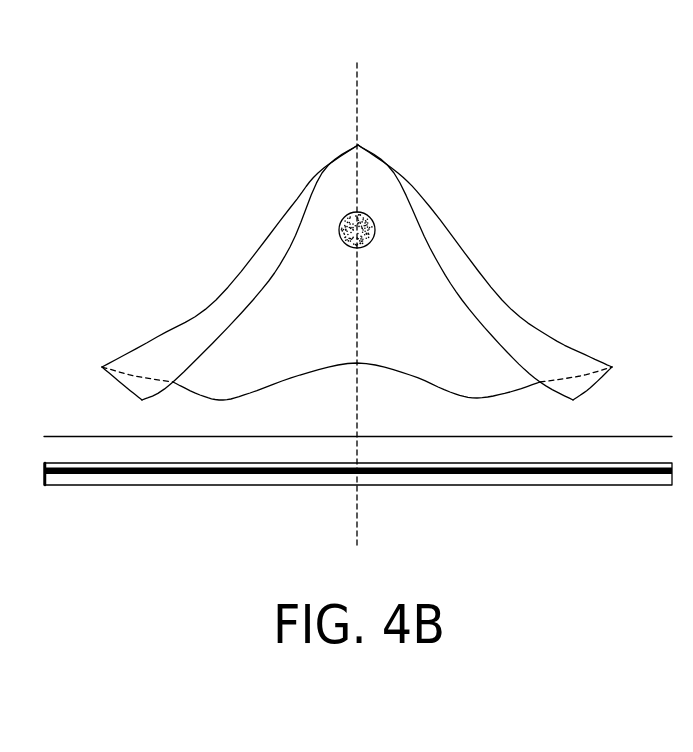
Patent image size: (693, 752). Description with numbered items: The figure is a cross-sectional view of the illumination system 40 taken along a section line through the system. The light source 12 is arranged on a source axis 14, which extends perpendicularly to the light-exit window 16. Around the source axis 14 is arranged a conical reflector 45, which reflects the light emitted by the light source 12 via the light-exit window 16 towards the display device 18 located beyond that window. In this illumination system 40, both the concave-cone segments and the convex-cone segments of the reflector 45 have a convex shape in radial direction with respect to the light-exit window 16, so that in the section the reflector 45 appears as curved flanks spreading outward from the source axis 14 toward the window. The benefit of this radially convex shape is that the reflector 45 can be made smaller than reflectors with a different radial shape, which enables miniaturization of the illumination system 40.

The illumination system 40 is at (610, 118).
The source axis 14 is at (357, 102).
The reflector 45 is at (482, 278).
The light source 12 is at (375, 222).
The light-exit window 16 is at (566, 434).
The display device 18 is at (532, 475).